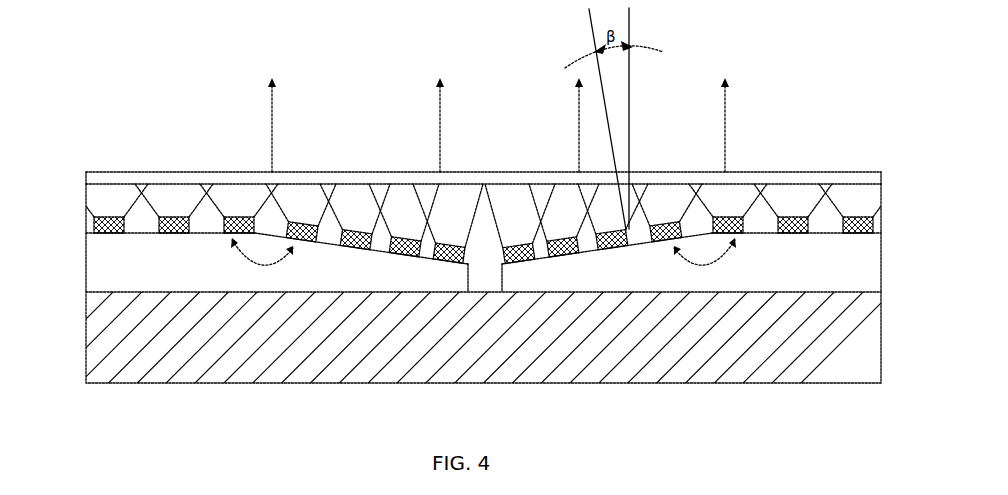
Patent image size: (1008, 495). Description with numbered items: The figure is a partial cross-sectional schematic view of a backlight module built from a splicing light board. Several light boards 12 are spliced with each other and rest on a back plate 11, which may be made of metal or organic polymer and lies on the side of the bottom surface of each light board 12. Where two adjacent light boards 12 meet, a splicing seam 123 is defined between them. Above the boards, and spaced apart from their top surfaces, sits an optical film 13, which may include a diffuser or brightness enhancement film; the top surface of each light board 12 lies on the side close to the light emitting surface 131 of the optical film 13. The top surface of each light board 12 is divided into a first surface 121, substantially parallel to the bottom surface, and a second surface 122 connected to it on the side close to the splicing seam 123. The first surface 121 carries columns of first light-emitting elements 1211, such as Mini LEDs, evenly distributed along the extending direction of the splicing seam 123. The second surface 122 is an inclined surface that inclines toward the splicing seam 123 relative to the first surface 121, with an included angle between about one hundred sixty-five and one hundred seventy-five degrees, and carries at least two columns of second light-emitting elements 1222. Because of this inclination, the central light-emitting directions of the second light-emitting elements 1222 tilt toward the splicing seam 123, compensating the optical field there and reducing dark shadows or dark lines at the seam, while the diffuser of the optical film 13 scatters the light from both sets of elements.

The back plate 11 is at (127, 368).
The light board 12 is at (483, 308).
The first surface 121 is at (215, 235).
The second surface 122 is at (394, 255).
The splicing seam 123 is at (487, 277).
The first light-emitting element 1211 is at (240, 218).
The second light-emitting element 1222 is at (357, 240).
The optical film 13 is at (165, 183).
The light emitting surface 131 is at (818, 172).